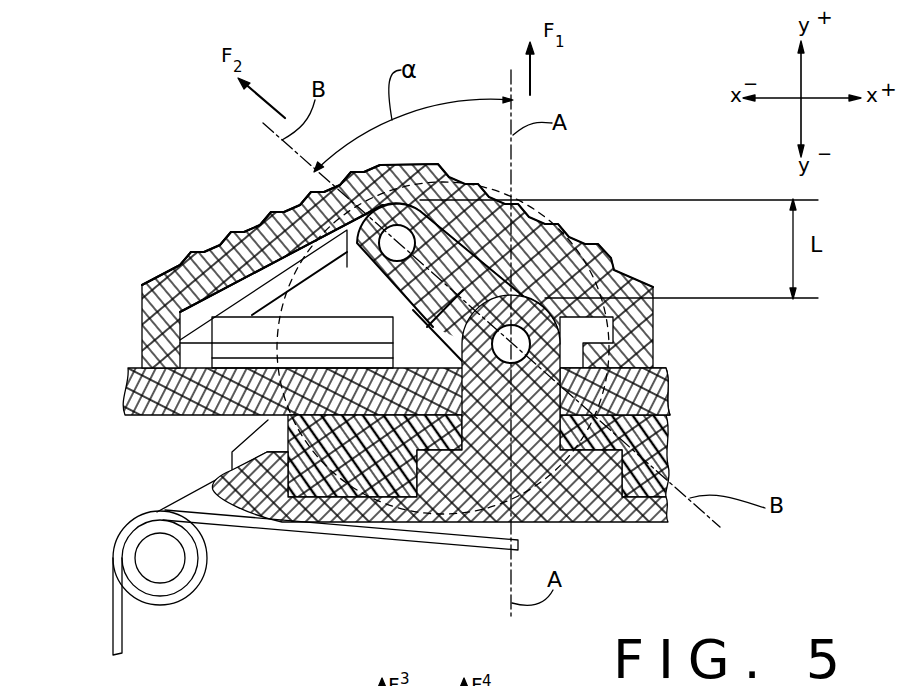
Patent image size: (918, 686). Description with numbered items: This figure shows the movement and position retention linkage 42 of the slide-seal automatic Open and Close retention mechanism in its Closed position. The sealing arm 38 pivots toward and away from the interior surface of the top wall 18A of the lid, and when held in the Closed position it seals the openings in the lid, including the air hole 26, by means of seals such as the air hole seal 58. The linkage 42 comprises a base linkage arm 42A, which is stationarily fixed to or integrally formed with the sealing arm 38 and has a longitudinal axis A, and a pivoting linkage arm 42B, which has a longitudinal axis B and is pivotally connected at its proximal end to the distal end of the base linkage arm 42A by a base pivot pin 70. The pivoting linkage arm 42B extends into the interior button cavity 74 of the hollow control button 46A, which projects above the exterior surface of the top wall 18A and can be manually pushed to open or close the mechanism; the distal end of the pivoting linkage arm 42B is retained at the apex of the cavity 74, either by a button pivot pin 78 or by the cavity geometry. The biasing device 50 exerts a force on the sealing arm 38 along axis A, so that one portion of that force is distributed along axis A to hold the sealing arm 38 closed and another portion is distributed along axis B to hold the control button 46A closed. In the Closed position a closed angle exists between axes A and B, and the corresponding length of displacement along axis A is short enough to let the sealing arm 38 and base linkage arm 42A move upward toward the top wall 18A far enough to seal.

The top wall 18A is at (173, 393).
The air hole 26 is at (607, 401).
The sealing arm 38 is at (580, 478).
The movement and position retention linkage 42 is at (590, 277).
The base linkage arm 42A is at (607, 402).
The pivoting linkage arm 42B is at (437, 250).
The control button 46A is at (305, 218).
The biasing device 50 is at (155, 512).
The air hole seal 58 is at (317, 480).
The base pivot pin 70 is at (560, 318).
The interior button cavity 74 is at (277, 243).
The button pivot pin 78 is at (400, 240).